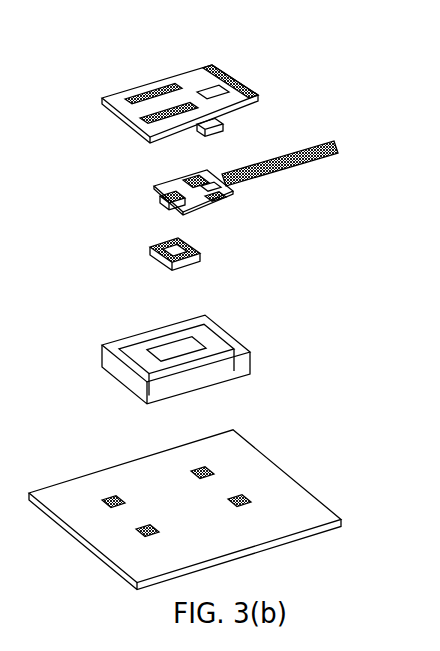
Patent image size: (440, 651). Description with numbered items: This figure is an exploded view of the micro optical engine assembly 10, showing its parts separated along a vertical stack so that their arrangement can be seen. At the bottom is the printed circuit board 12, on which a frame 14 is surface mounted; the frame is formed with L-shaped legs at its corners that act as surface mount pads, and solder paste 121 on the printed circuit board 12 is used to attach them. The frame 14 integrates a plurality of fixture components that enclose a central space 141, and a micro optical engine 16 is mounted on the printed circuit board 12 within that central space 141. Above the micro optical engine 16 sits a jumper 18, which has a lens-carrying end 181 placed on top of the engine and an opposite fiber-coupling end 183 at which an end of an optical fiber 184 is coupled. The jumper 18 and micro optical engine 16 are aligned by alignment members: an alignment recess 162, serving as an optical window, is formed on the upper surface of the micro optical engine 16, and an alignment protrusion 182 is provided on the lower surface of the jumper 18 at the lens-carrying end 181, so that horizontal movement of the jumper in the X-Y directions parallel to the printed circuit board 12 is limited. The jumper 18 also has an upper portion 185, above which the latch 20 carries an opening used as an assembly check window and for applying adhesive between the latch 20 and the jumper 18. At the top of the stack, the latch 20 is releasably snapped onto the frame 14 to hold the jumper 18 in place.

The micro optical engine assembly 10 is at (258, 66).
The printed circuit board 12 is at (105, 468).
The solder paste 121 is at (246, 500).
The frame 14 is at (127, 345).
The central space 141 is at (175, 355).
The micro optical engine 16 is at (145, 248).
The alignment recess 162 is at (178, 255).
The jumper 18 is at (235, 179).
The lens-carrying end 181 is at (185, 214).
The alignment protrusion 182 is at (176, 209).
The fiber-coupling end 183 is at (226, 198).
The optical fiber 184 is at (335, 149).
The upper portion 185 is at (211, 181).
The latch 20 is at (167, 82).